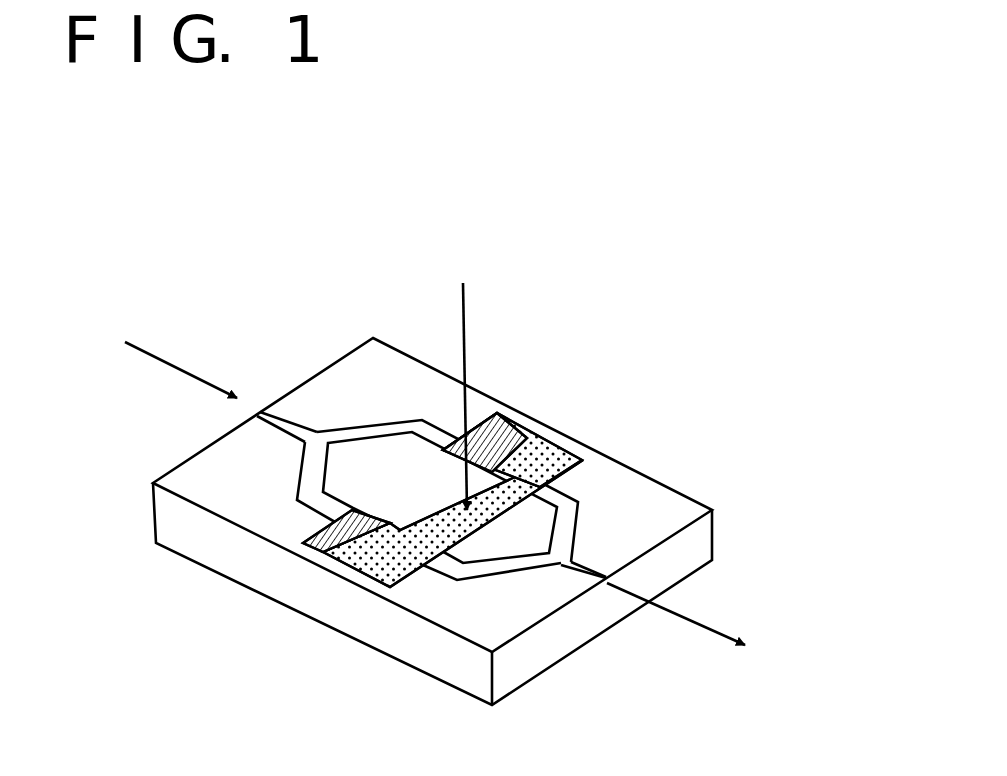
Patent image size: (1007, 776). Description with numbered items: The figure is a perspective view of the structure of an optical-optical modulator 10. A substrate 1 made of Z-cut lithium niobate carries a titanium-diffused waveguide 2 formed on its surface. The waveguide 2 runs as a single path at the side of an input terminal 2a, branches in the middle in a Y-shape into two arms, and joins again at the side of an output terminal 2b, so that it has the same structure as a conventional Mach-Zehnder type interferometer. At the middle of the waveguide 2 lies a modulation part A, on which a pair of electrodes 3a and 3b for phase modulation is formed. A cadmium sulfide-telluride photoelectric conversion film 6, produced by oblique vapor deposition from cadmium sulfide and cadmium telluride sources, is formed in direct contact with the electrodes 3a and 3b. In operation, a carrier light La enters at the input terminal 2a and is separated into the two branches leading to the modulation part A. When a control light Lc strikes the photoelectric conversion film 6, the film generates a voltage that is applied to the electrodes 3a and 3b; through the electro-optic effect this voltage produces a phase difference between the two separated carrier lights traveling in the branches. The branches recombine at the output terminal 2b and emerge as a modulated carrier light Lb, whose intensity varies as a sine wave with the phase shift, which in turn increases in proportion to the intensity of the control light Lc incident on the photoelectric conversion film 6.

The substrate 1 is at (450, 662).
The waveguide 2 is at (361, 540).
The input terminal 2a is at (257, 414).
The output terminal 2b is at (587, 571).
The electrode 3a is at (312, 546).
The electrode 3b is at (505, 414).
The photoelectric conversion film 6 is at (380, 570).
The optical-optical modulator 10 is at (421, 496).
The modulation part A is at (482, 421).
The carrier light La is at (163, 349).
The modulated carrier light Lb is at (701, 624).
The control light Lc is at (468, 375).